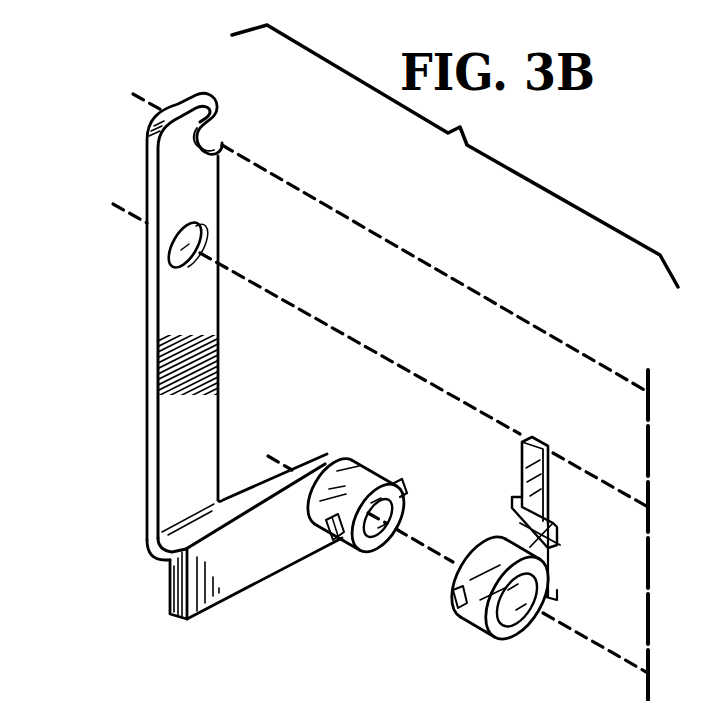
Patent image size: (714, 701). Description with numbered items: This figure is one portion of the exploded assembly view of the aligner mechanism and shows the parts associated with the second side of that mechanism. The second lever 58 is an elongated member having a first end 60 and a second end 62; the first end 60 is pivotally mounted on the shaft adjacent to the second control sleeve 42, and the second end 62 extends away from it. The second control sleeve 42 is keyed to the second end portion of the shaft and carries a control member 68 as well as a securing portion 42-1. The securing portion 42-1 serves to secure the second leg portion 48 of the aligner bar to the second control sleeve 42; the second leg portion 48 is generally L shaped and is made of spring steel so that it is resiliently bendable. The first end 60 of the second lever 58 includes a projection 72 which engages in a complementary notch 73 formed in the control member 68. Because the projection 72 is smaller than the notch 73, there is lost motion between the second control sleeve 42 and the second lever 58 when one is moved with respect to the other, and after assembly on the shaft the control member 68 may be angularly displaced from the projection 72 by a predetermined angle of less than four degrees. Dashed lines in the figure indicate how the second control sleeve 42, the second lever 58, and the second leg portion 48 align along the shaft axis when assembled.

The second lever 58 is at (126, 388).
The second end 62 is at (172, 151).
The first end 60 is at (363, 458).
The projection 72 is at (323, 537).
The second leg portion 48 is at (522, 464).
The securing portion 42-1 is at (512, 506).
The control member 68 is at (453, 573).
The notch 73 is at (455, 602).
The second control sleeve 42 is at (482, 632).